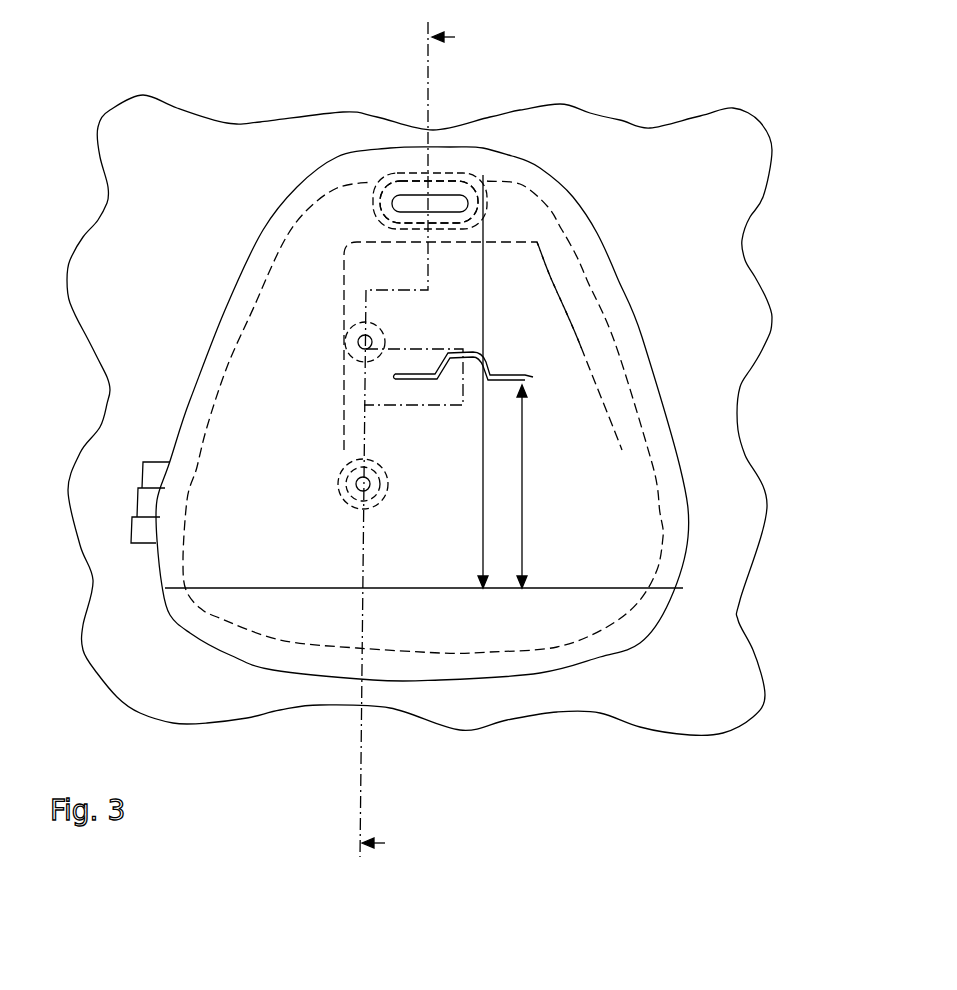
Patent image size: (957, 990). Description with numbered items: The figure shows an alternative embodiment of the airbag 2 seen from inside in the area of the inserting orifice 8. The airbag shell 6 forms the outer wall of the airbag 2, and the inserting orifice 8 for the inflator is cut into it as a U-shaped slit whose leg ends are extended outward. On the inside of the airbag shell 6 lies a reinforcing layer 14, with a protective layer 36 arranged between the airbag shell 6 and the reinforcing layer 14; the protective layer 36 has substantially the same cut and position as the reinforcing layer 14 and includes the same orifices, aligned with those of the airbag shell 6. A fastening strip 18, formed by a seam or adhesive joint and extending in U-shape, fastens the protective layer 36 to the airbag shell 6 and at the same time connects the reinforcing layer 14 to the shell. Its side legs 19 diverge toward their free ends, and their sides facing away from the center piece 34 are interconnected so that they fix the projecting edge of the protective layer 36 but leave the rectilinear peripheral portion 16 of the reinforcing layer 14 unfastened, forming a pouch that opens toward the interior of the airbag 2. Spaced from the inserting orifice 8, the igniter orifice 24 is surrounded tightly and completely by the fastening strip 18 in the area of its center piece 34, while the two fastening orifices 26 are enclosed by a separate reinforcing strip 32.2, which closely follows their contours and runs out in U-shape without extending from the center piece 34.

The airbag 2 is at (142, 82).
The airbag shell 6 is at (237, 167).
The inserting orifice 8 is at (527, 375).
The reinforcing layer 14 is at (172, 465).
The peripheral portion 16 is at (437, 589).
The fastening strip 18 is at (662, 537).
The side legs 19 is at (260, 293).
The igniter orifice 24 is at (417, 200).
The fastening orifices 26 is at (365, 342).
The reinforcing strip 32.2 is at (553, 280).
The center piece 34 is at (472, 168).
The protective layer 36 is at (537, 630).